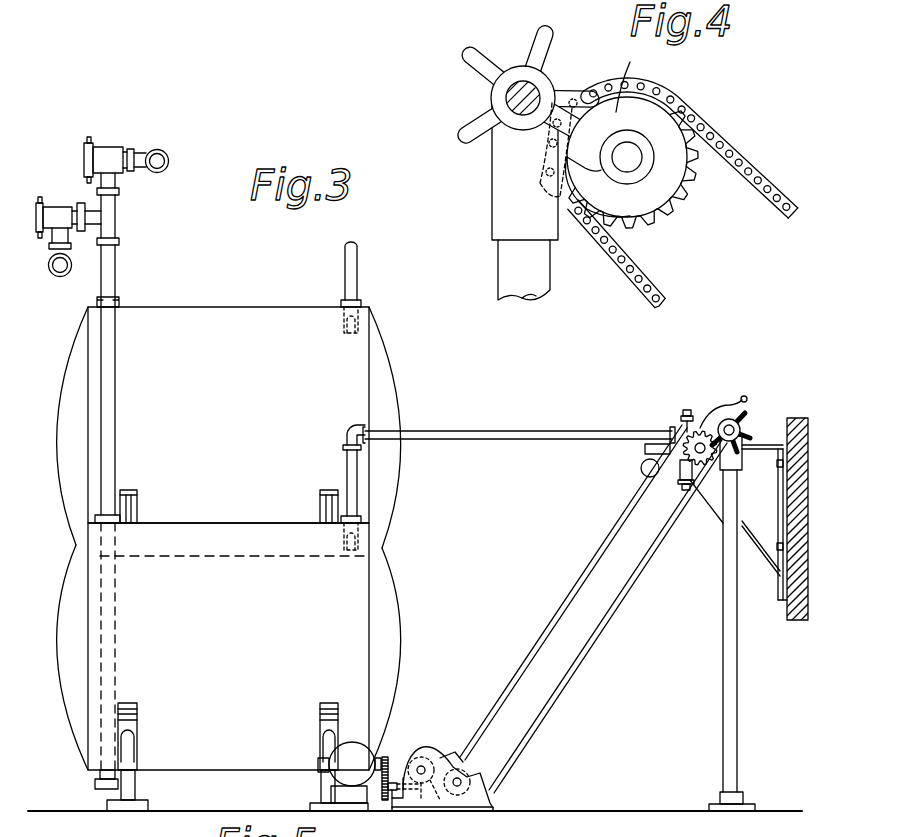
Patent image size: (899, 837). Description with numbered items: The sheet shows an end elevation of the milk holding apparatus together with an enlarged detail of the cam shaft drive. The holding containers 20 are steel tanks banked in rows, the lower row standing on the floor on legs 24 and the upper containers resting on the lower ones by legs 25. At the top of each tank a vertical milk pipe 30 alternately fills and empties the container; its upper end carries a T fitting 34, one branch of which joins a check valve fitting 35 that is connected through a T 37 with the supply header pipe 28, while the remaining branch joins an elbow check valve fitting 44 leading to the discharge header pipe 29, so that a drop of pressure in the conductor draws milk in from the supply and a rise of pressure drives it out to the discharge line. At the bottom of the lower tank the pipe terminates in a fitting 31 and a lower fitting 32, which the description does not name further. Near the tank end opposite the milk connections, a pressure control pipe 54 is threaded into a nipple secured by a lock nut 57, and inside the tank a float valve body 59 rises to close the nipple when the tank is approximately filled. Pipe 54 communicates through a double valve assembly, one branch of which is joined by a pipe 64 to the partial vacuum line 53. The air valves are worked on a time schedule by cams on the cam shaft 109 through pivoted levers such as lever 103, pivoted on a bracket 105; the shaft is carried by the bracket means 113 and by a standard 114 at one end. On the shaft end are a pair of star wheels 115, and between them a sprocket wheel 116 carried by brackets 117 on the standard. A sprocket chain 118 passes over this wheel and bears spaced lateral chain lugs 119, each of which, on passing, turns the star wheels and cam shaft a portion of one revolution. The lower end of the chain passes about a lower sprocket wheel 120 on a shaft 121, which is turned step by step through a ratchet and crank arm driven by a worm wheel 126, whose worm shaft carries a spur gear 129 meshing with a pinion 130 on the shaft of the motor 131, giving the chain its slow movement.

In FIG. 3, the holding container 20 is at (80, 508).
In FIG. 3, the legs 24 is at (131, 777).
In FIG. 3, the legs 25 is at (138, 509).
In FIG. 3, the header pipe 28 is at (166, 151).
In FIG. 3, the discharge header pipe 29 is at (50, 276).
In FIG. 3, the vertical milk pipe 30 is at (112, 278).
In FIG. 3, the drain elbow 31 is at (100, 776).
In FIG. 3, the drain fitting 32 is at (96, 786).
In FIG. 3, the T fitting 34 is at (117, 226).
In FIG. 3, the check valve fitting 35 is at (110, 178).
In FIG. 3, the T 37 is at (139, 148).
In FIG. 3, the elbow check valve fitting 44 is at (78, 207).
In FIG. 3, the vacuum line 53 is at (641, 468).
In FIG. 3, the pressure control pipe 54 is at (351, 287).
In FIG. 3, the lock nut 57 is at (361, 305).
In FIG. 3, the float valve body 59 is at (344, 330).
In FIG. 3, the pipe 64 is at (668, 440).
In FIG. 3, the pivoted lever 103 is at (699, 410).
In FIG. 3, the bracket 105 is at (688, 410).
In FIG. 4, the cam shaft 109 is at (505, 100).
In FIG. 3, the bracket means 113 is at (763, 438).
In FIG. 3, the standard 114 is at (727, 692).
In FIG. 4, the standard 114 is at (540, 268).
In FIG. 3, the star wheels 115 is at (745, 410).
In FIG. 4, the star wheels 115 is at (478, 70).
In FIG. 3, the sprocket wheel 116 is at (684, 470).
In FIG. 4, the sprocket wheel 116 is at (688, 200).
In FIG. 4, the brackets 117 is at (628, 76).
In FIG. 3, the sprocket chain 118 is at (608, 550).
In FIG. 4, the sprocket chain 118 is at (708, 125).
In FIG. 3, the chain lugs 119 is at (561, 607).
In FIG. 3, the lower sprocket wheel 120 is at (464, 757).
In FIG. 3, the shaft 121 is at (457, 787).
In FIG. 3, the worm wheel 126 is at (444, 745).
In FIG. 3, the spur gear 129 is at (385, 801).
In FIG. 3, the pinion 130 is at (384, 757).
In FIG. 3, the motor 131 is at (342, 760).